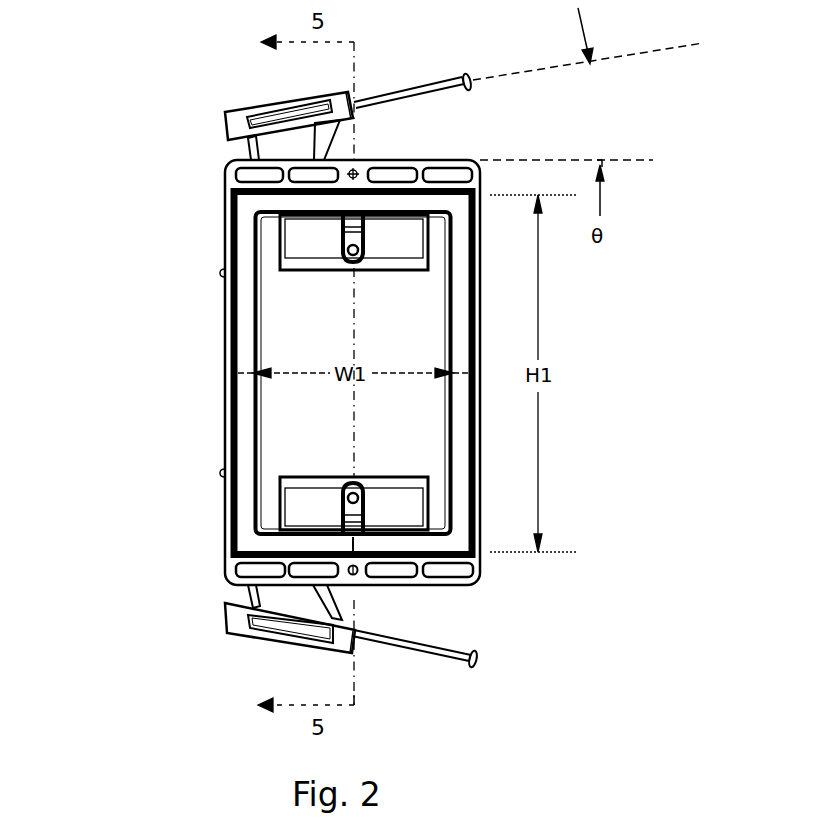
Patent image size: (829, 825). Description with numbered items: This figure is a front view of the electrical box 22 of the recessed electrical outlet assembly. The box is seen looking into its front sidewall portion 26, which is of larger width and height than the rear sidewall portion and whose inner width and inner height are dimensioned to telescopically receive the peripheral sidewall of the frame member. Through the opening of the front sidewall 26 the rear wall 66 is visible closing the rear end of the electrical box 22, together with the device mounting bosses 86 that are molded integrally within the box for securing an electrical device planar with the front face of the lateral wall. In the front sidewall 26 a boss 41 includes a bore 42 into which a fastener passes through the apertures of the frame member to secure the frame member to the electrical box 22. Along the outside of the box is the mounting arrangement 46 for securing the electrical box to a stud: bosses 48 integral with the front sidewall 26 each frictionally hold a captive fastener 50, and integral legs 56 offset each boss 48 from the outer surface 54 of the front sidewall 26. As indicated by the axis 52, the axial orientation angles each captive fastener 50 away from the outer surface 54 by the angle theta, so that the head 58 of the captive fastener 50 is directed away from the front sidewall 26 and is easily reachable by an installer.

The electrical box 22 is at (118, 195).
The front sidewall portion 26 is at (230, 318).
The boss 41 is at (442, 578).
The bore 42 is at (360, 582).
The mounting arrangement 46 is at (459, 66).
The bosses 48 is at (289, 100).
The captive fastener 50 is at (458, 364).
The axis 52 is at (648, 55).
The outer surface 54 is at (436, 150).
The integral legs 56 is at (252, 150).
The head 58 is at (473, 87).
The rear wall 66 is at (406, 337).
The device mounting bosses 86 is at (352, 486).